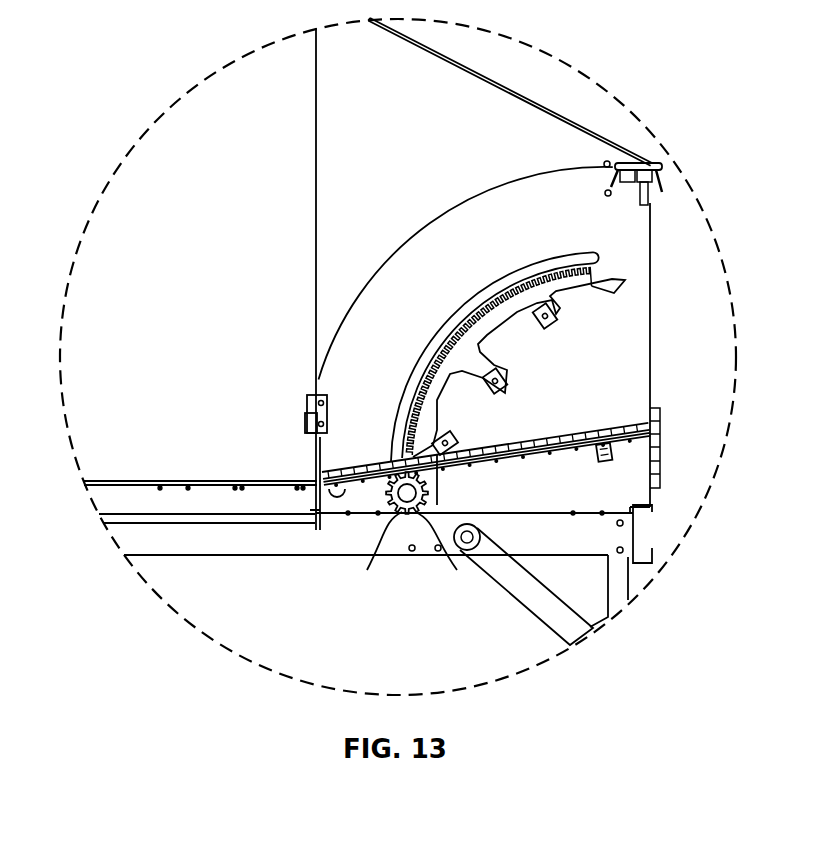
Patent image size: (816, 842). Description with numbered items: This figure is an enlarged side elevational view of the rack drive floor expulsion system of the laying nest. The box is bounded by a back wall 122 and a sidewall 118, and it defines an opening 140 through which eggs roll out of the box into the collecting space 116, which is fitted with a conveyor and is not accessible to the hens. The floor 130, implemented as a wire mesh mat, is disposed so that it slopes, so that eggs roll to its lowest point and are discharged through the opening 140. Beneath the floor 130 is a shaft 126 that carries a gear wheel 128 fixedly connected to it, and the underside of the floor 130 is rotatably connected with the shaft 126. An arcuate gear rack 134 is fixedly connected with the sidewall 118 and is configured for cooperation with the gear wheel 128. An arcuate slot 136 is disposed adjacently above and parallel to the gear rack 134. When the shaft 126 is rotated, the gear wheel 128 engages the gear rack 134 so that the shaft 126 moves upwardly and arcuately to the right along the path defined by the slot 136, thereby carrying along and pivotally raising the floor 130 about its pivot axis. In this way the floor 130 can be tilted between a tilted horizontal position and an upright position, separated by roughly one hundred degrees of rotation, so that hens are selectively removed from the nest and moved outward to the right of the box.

The collecting space 116 is at (214, 401).
The sidewall 118 is at (646, 335).
The back wall 122 is at (462, 200).
The shaft 126 is at (406, 511).
The gear wheel 128 is at (417, 513).
The floor 130 is at (598, 424).
The gear rack 134 is at (463, 360).
The arcuate slot 136 is at (477, 302).
The opening 140 is at (314, 470).